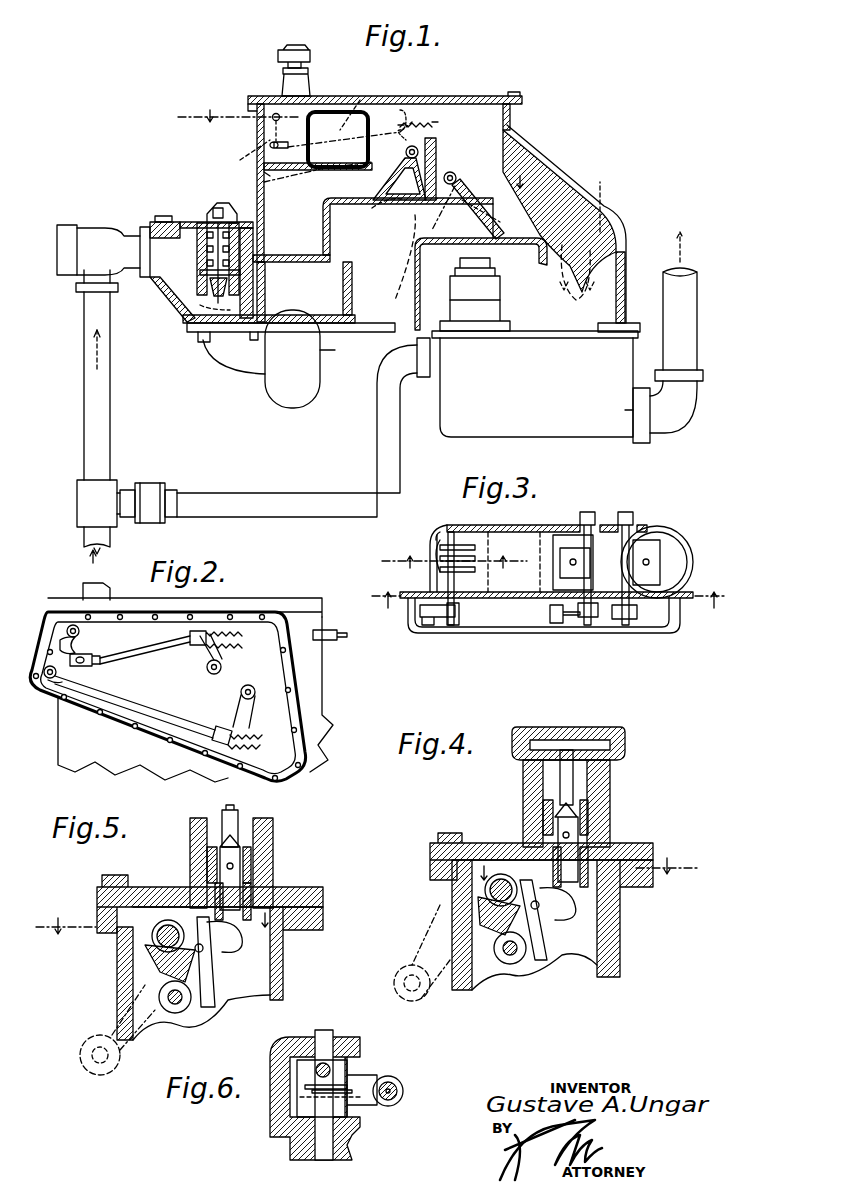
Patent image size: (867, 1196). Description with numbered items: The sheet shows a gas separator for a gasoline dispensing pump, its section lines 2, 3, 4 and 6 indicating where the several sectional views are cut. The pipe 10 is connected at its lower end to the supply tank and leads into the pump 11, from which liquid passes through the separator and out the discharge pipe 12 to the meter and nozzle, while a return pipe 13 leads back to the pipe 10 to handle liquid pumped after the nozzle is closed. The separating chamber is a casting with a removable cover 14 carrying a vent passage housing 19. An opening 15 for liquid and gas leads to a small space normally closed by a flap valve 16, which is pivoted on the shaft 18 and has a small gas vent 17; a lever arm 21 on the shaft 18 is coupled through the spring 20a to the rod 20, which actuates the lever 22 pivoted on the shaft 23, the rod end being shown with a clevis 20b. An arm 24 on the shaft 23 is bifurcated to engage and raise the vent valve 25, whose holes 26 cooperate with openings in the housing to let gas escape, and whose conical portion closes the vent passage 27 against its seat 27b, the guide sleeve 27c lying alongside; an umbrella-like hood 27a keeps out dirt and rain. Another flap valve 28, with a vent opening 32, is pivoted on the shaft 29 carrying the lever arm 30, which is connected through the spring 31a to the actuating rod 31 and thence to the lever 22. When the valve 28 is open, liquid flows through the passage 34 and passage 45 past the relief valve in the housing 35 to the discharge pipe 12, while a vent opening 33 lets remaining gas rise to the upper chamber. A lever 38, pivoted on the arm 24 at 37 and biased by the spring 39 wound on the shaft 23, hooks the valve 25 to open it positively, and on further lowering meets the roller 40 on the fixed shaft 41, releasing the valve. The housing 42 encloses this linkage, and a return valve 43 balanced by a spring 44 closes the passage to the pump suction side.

In FIG. 3, the section line 2— 2 is at (548, 599).
In FIG. 1, the section line 3— 3 is at (355, 146).
In FIG. 3, the section line 4— 4 is at (454, 555).
In FIG. 4, the section line 6— 6 is at (589, 869).
In FIG. 5, the section line 6— 6 is at (157, 921).
In FIG. 1, the pipe 10 is at (95, 411).
In FIG. 1, the pump 11 is at (262, 380).
In FIG. 1, the discharge pipe 12 is at (688, 322).
In FIG. 1, the return pipe 13 is at (380, 447).
In FIG. 1, the removable cover 14 is at (452, 98).
In FIG. 2, the removable cover 14 is at (288, 600).
In FIG. 1, the opening 15 is at (415, 215).
In FIG. 1, the flap valve 16 is at (370, 210).
In FIG. 3, the flap valve 16 is at (555, 532).
In FIG. 1, the gas vent 17 is at (404, 169).
In FIG. 3, the gas vent 17 is at (540, 590).
In FIG. 1, the shaft 18 is at (416, 146).
In FIG. 2, the shaft 18 is at (218, 662).
In FIG. 3, the shaft 18 is at (588, 510).
In FIG. 1, the vent passage housing 19 is at (298, 84).
In FIG. 2, the vent passage housing 19 is at (88, 588).
In FIG. 4, the vent passage housing 19 is at (604, 790).
In FIG. 5, the vent passage housing 19 is at (186, 845).
In FIG. 1, the rod 20 is at (365, 100).
In FIG. 2, the rod 20 is at (145, 642).
In FIG. 1, the spring 20a is at (402, 108).
In FIG. 2, the spring 20a is at (212, 628).
In FIG. 2, the clevis 20b is at (90, 662).
In FIG. 1, the lever arm 21 is at (420, 115).
In FIG. 2, the lever arm 21 is at (200, 655).
In FIG. 3, the lever arm 21 is at (576, 628).
In FIG. 1, the lever 22 is at (282, 135).
In FIG. 2, the lever 22 is at (75, 640).
In FIG. 3, the lever 22 is at (440, 630).
In FIG. 4, the lever 22 is at (438, 938).
In FIG. 5, the lever 22 is at (108, 1014).
In FIG. 1, the shaft 23 is at (272, 118).
In FIG. 2, the shaft 23 is at (50, 625).
In FIG. 3, the shaft 23 is at (466, 630).
In FIG. 4, the shaft 23 is at (500, 880).
In FIG. 5, the shaft 23 is at (160, 940).
In FIG. 6, the shaft 23 is at (326, 1042).
In FIG. 3, the arm 24 is at (468, 545).
In FIG. 4, the arm 24 is at (560, 912).
In FIG. 5, the arm 24 is at (240, 935).
In FIG. 6, the arm 24 is at (365, 1080).
In FIG. 4, the vent valve 25 is at (594, 843).
In FIG. 5, the vent valve 25 is at (270, 892).
In FIG. 6, the vent valve 25 is at (395, 1078).
In FIG. 4, the holes 26 is at (570, 835).
In FIG. 5, the holes 26 is at (238, 866).
In FIG. 4, the vent passage 27 is at (560, 782).
In FIG. 5, the vent passage 27 is at (240, 818).
In FIG. 1, the hood 27a is at (286, 52).
In FIG. 4, the hood 27a is at (600, 732).
In FIG. 4, the seat 27b is at (542, 806).
In FIG. 5, the seat 27b is at (262, 840).
In FIG. 4, the sleeve 27c is at (592, 840).
In FIG. 5, the sleeve 27c is at (250, 876).
In FIG. 1, the flap valve 28 is at (462, 200).
In FIG. 3, the flap valve 28 is at (665, 548).
In FIG. 1, the shaft 29 is at (452, 172).
In FIG. 2, the shaft 29 is at (248, 686).
In FIG. 3, the shaft 29 is at (630, 510).
In FIG. 1, the lever arm 30 is at (418, 225).
In FIG. 2, the lever arm 30 is at (238, 706).
In FIG. 3, the lever arm 30 is at (622, 628).
In FIG. 1, the actuating rod 31 is at (310, 170).
In FIG. 2, the actuating rod 31 is at (160, 713).
In FIG. 2, the spring 31a is at (240, 742).
In FIG. 1, the vent opening 32 is at (480, 205).
In FIG. 3, the vent opening 32 is at (648, 540).
In FIG. 1, the vent opening 33 is at (598, 207).
In FIG. 1, the passage 34 is at (586, 286).
In FIG. 1, the housing 35 is at (490, 302).
In FIG. 4, the pivot 37 is at (555, 935).
In FIG. 5, the pivot 37 is at (210, 950).
In FIG. 4, the lever 38 is at (540, 945).
In FIG. 5, the lever 38 is at (205, 982).
In FIG. 6, the lever 38 is at (375, 1100).
In FIG. 4, the spring 39 is at (478, 897).
In FIG. 5, the spring 39 is at (190, 908).
In FIG. 6, the spring 39 is at (345, 1095).
In FIG. 4, the roller 40 is at (520, 960).
In FIG. 5, the roller 40 is at (175, 1008).
In FIG. 4, the fixed shaft 41 is at (508, 956).
In FIG. 5, the fixed shaft 41 is at (183, 1010).
In FIG. 3, the housing 42 is at (520, 635).
In FIG. 1, the return valve 43 is at (245, 272).
In FIG. 1, the spring 44 is at (200, 252).
In FIG. 1, the passage 45 is at (262, 174).